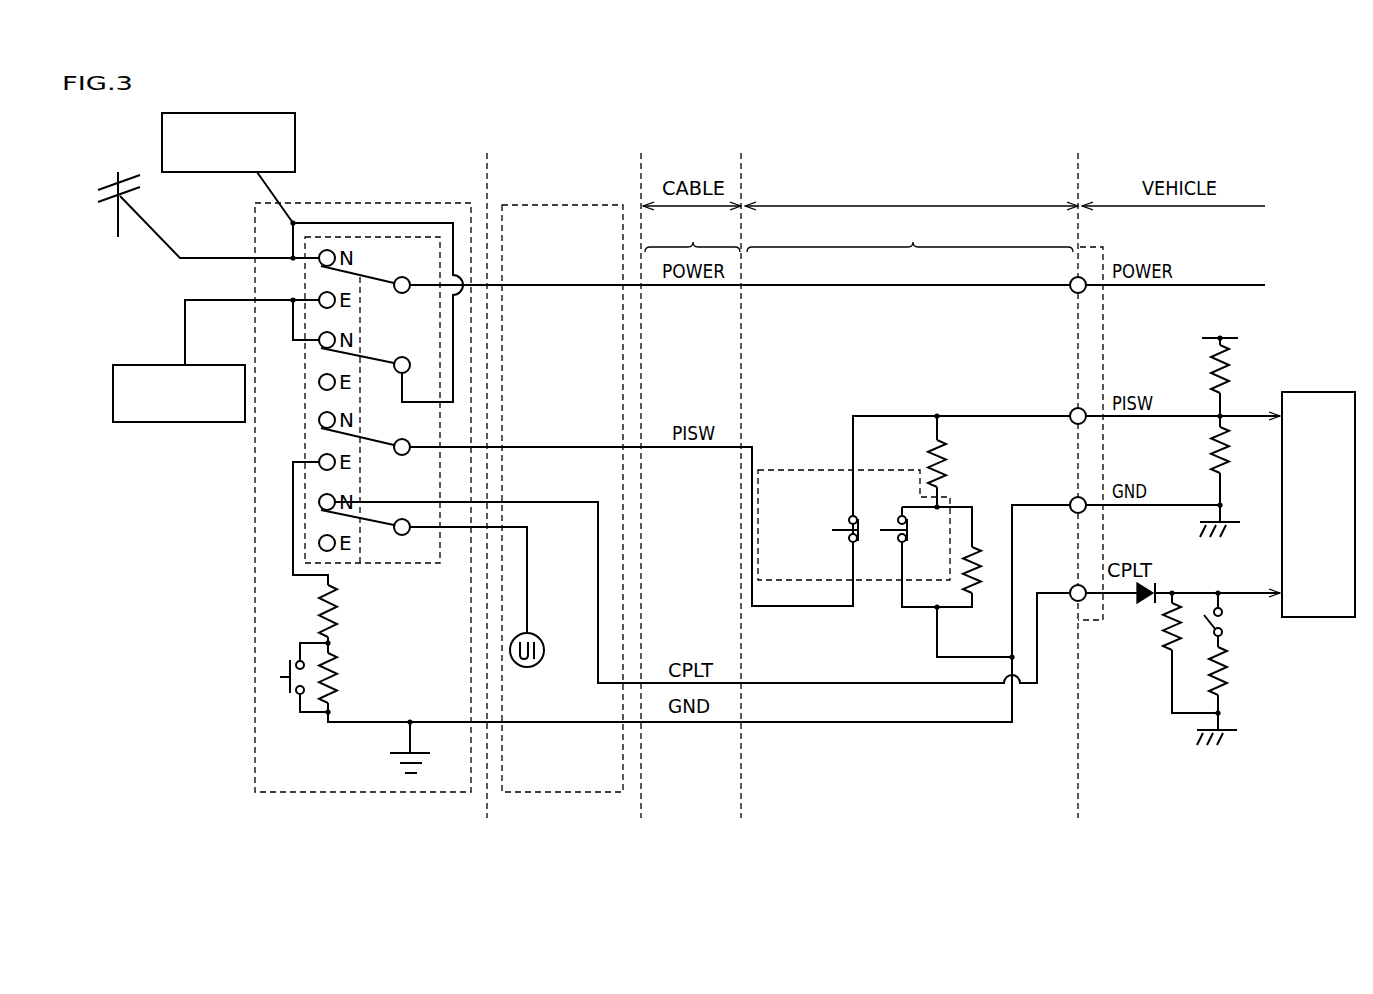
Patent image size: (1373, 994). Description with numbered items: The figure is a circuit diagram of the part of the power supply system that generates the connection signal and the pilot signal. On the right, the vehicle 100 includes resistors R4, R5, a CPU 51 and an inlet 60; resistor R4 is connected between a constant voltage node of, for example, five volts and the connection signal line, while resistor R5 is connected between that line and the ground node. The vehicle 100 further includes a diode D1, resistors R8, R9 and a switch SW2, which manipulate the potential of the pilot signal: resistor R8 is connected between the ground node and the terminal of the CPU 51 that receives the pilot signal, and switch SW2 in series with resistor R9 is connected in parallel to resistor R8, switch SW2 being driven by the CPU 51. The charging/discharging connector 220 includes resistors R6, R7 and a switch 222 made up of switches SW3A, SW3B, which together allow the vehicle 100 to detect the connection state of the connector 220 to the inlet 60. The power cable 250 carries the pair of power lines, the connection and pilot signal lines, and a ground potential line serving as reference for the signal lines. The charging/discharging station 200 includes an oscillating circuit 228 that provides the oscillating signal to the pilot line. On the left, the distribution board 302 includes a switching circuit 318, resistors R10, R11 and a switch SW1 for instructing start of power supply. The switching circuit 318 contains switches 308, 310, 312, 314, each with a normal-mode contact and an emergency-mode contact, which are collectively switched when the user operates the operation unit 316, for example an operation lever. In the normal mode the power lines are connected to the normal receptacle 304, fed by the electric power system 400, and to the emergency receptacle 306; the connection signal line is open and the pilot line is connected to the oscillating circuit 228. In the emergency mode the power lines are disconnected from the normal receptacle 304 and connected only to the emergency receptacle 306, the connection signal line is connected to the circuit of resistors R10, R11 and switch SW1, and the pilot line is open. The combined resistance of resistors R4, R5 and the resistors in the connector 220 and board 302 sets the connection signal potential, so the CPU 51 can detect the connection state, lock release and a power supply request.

The vehicle 100 is at (1300, 182).
The charging/discharging station 200 is at (622, 205).
The charging/discharging connector 220 is at (911, 205).
The switch 222 is at (877, 582).
The CPLT oscillating circuit 228 is at (527, 669).
The power cable 250 is at (692, 229).
The distribution board 302 is at (457, 203).
The normal receptacle 304 is at (231, 113).
The emergency receptacle 306 is at (153, 363).
The switch 308 is at (372, 278).
The switch 310 is at (372, 358).
The switch 312 is at (372, 440).
The switch 314 is at (372, 518).
The operation unit 316 is at (362, 318).
The switching circuit 318 is at (393, 566).
The electric power system 400 is at (125, 172).
The CPU 51 is at (1321, 392).
The inlet 60 is at (1100, 247).
The switch SW1 is at (285, 668).
The switch SW2 is at (1226, 623).
The switch SW3A is at (845, 533).
The switch SW3B is at (895, 527).
The resistor R4 is at (1233, 377).
The resistor R5 is at (1233, 455).
The resistor R6 is at (948, 468).
The resistor R7 is at (980, 575).
The resistor R8 is at (1182, 633).
The resistor R9 is at (1230, 676).
The resistor R10 is at (340, 613).
The resistor R11 is at (340, 681).
The diode D1 is at (1145, 604).